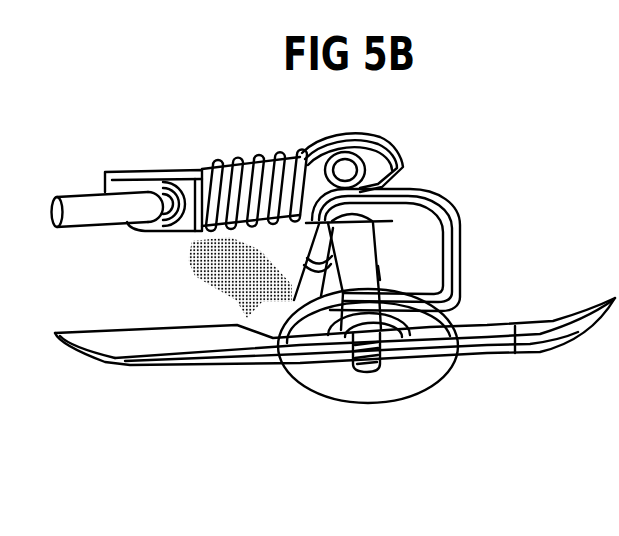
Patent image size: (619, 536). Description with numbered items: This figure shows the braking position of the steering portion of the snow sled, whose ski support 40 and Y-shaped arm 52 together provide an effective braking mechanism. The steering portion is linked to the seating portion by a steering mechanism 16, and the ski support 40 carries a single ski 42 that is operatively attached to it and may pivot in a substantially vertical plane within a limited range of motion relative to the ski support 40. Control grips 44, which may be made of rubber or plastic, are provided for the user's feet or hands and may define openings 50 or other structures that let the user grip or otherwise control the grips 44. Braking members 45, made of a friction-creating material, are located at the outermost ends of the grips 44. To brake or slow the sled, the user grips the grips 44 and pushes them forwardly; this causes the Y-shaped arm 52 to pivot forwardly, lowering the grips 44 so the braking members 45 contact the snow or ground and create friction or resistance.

The steering mechanism 16 is at (222, 163).
The ski support 40 is at (345, 172).
The control grips 44 is at (378, 266).
The openings 50 is at (413, 247).
The Y-shaped arm 52 is at (298, 270).
The ski 42 is at (485, 328).
The braking members 45 is at (388, 352).